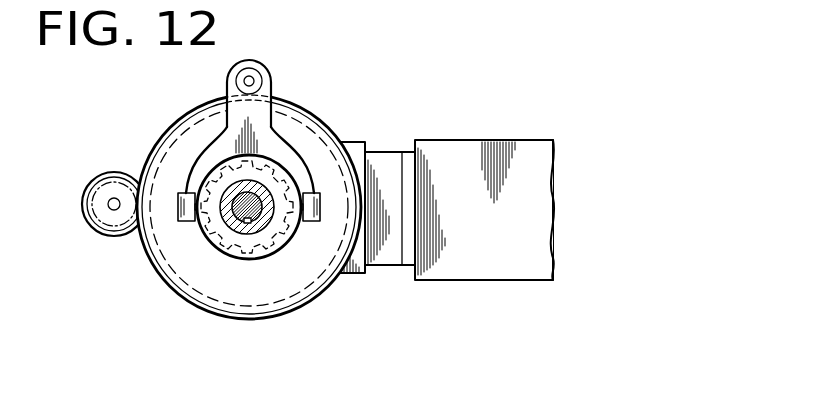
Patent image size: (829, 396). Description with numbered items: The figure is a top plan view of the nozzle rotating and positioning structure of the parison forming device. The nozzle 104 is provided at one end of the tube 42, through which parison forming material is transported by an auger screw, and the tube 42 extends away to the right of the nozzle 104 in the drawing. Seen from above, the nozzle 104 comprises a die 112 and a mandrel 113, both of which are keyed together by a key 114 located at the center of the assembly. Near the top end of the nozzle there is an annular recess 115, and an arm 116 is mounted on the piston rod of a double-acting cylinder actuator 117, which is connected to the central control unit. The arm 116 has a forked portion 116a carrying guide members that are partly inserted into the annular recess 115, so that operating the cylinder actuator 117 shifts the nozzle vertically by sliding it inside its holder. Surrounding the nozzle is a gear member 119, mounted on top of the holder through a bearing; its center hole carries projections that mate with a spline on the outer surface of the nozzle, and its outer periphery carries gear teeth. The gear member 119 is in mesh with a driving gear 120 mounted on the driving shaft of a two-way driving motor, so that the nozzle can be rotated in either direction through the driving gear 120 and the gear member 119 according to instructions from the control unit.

The tube 42 is at (407, 252).
The nozzle 104 is at (319, 117).
The die 112 is at (268, 222).
The mandrel 113 is at (265, 208).
The key 114 is at (249, 223).
The annular recess 115 is at (228, 242).
The arm 116 is at (214, 147).
The forked portion 116a is at (188, 191).
The double-acting cylinder actuator 117 is at (256, 80).
The gear member 119 is at (169, 262).
The driving gear 120 is at (115, 224).